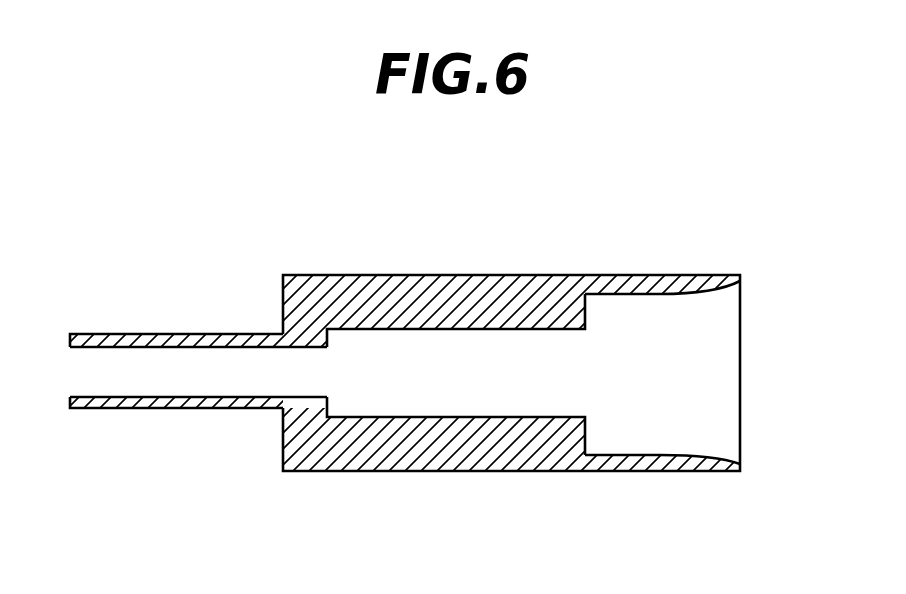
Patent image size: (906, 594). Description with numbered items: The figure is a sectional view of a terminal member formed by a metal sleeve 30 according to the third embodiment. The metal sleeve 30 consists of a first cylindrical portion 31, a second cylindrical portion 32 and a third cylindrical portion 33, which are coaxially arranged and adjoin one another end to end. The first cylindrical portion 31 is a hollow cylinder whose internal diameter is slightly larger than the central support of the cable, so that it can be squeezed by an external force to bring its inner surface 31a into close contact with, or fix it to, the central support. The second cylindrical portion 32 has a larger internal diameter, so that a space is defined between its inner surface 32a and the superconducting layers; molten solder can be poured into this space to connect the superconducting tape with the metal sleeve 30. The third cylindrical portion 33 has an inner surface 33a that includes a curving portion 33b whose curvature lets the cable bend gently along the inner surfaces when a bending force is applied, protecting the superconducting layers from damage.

The metal sleeve 30 is at (406, 262).
The first cylindrical portion 31 is at (160, 410).
The inner surface of the first cylindrical portion 31a is at (164, 356).
The second cylindrical portion 32 is at (405, 472).
The inner surface of the second cylindrical portion 32a is at (470, 345).
The third cylindrical portion 33 is at (660, 473).
The inner surface of the third cylindrical portion 33a is at (635, 294).
The curving portion 33b is at (712, 289).